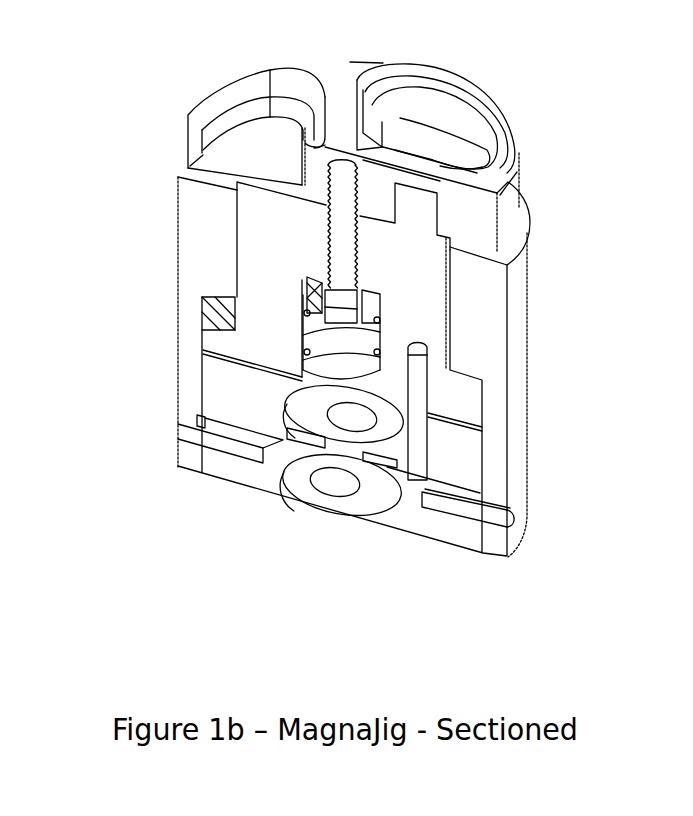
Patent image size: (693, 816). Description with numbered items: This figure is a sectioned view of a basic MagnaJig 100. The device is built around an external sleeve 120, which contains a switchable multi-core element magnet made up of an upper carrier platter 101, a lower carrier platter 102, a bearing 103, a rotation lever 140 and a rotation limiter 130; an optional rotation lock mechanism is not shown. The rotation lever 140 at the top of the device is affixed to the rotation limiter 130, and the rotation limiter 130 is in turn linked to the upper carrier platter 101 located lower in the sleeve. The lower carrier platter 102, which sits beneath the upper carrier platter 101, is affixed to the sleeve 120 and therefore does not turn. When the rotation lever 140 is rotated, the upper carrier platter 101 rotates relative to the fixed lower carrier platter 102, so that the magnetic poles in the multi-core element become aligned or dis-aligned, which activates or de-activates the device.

The MagnaJig 100 is at (137, 498).
The upper carrier platter 101 is at (450, 458).
The lower carrier platter 102 is at (260, 478).
The bearing 103 is at (368, 455).
The external sleeve 120 is at (388, 382).
The rotation limiter 130 is at (403, 275).
The rotation lever 140 is at (502, 210).